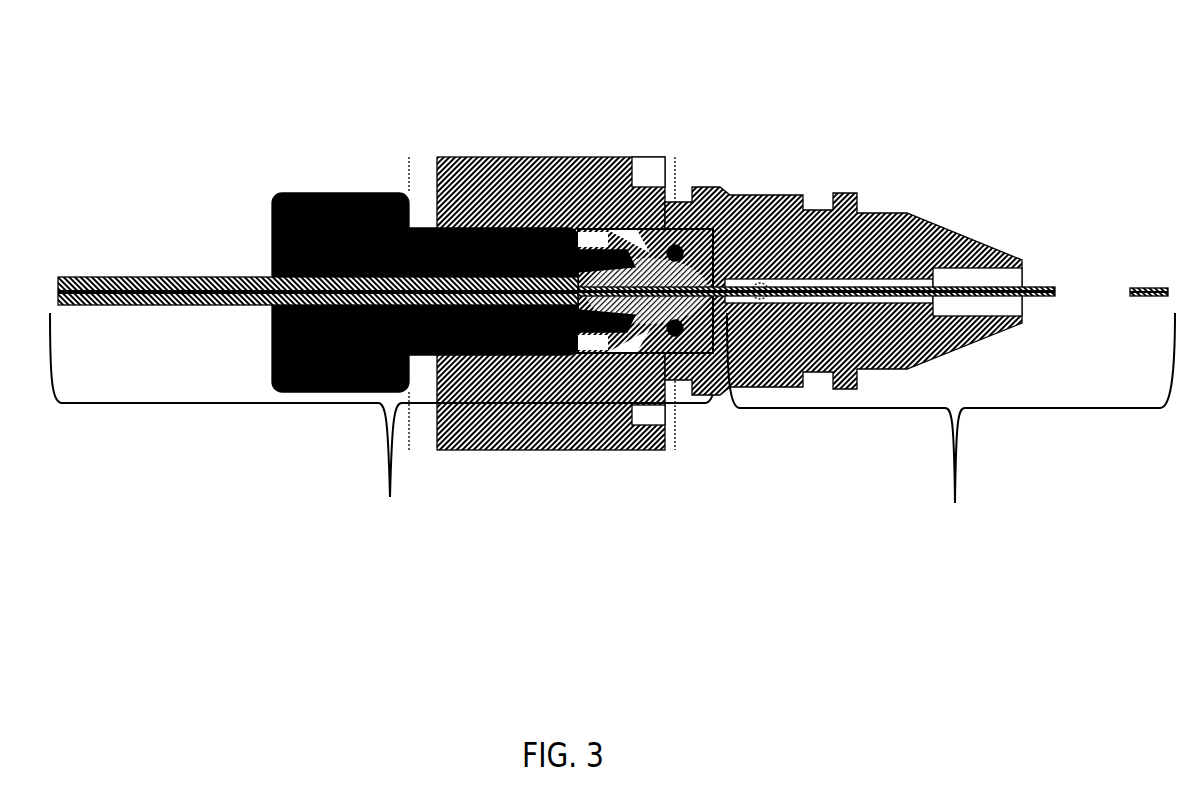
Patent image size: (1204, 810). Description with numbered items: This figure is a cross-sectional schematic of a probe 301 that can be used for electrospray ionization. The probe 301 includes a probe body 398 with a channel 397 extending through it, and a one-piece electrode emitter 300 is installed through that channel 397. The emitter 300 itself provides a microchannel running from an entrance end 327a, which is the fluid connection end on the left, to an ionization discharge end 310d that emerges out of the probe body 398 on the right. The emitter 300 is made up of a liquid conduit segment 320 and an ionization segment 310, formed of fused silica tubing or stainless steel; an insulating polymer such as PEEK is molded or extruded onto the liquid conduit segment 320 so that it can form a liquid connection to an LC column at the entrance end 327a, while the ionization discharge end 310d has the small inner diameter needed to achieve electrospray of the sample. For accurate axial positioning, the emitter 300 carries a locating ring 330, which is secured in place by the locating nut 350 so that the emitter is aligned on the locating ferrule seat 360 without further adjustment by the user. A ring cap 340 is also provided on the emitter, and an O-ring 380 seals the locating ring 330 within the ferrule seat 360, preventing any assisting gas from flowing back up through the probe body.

The emitter 300 is at (207, 270).
The probe 301 is at (605, 99).
The ionization segment 310 is at (876, 416).
The ionization discharge end 310d is at (1163, 281).
The liquid conduit segment 320 is at (385, 344).
The entrance end 327a is at (69, 281).
The locating ring 330 is at (648, 317).
The ring cap 340 is at (590, 324).
The locating nut 350 is at (353, 208).
The locating ferrule seat 360 is at (695, 337).
The O-ring 380 is at (677, 245).
The channel 397 is at (847, 302).
The probe body 398 is at (765, 207).